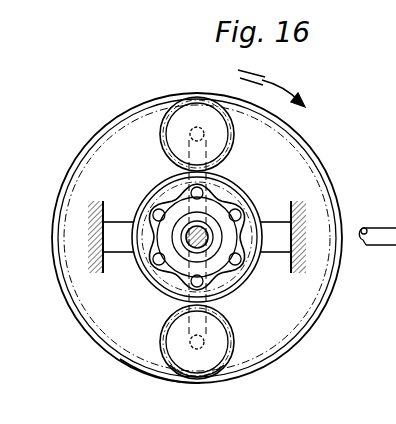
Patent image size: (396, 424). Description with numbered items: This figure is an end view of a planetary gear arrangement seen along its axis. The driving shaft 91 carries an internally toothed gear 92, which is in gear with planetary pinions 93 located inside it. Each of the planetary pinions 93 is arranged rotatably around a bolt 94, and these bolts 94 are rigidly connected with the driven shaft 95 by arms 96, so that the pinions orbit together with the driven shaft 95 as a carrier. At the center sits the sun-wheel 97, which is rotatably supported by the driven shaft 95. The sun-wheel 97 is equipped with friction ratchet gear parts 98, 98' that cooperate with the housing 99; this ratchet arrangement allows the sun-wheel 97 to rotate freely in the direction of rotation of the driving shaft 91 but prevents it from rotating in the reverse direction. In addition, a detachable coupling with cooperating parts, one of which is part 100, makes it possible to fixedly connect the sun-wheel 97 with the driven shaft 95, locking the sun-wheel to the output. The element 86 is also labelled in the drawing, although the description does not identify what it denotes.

The internally toothed gear 92 is at (284, 123).
The planetary pinion 93 is at (160, 131).
The bolt 94 is at (204, 134).
The driven shaft 95 is at (208, 226).
The arm 96 is at (222, 289).
The sun-wheel 97 is at (228, 185).
The friction ratchet gear part 98 is at (176, 249).
The friction ratchet gear part 98' is at (169, 229).
The housing 99 is at (92, 247).
The coupling part 100 is at (197, 360).
The drive wheel 86 is at (160, 391).
The driving shaft 91 is at (388, 237).